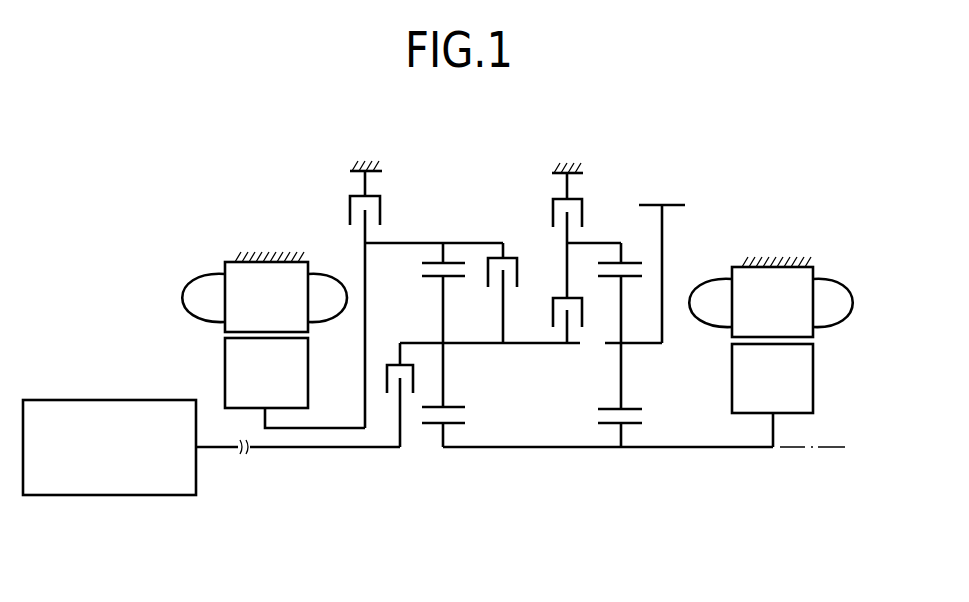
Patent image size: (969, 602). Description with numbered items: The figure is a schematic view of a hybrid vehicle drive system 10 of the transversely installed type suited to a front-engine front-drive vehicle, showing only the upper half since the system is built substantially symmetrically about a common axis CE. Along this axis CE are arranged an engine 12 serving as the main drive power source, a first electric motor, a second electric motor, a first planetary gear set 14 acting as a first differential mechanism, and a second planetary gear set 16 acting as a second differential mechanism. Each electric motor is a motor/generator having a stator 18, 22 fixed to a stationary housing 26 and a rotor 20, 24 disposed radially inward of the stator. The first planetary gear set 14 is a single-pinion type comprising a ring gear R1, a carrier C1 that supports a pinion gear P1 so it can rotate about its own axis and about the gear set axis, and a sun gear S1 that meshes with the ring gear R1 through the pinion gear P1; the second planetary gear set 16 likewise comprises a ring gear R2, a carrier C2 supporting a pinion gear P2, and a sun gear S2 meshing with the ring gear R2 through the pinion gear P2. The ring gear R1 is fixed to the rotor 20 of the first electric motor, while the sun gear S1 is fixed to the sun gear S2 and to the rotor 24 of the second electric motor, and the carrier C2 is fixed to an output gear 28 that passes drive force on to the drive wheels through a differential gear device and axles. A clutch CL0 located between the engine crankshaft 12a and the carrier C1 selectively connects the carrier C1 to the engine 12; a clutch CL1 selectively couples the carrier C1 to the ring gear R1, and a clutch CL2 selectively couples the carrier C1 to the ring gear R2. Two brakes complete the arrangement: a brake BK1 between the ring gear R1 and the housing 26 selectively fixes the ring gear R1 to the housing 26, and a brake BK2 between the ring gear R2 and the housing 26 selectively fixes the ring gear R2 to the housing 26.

The hybrid vehicle drive system 10 is at (764, 138).
The engine 12 is at (62, 405).
The crankshaft 12a is at (232, 452).
The first planetary gear set 14 is at (483, 380).
The second planetary gear set 16 is at (626, 368).
The stator 18 is at (228, 324).
The rotor 20 is at (228, 375).
The stator 22 is at (808, 330).
The rotor 24 is at (808, 378).
The housing 26 is at (270, 254).
The output gear 28 is at (672, 203).
The brake BK1 is at (350, 209).
The brake BK2 is at (553, 213).
The clutch CL0 is at (385, 366).
The clutch CL1 is at (521, 271).
The clutch CL2 is at (553, 311).
The ring gear R1 is at (433, 262).
The carrier C1 is at (463, 342).
The pinion gear P1 is at (447, 406).
The sun gear S1 is at (451, 424).
The ring gear R2 is at (624, 262).
The carrier C2 is at (636, 345).
The pinion gear P2 is at (614, 408).
The sun gear S2 is at (628, 424).
The common axis CE is at (660, 448).